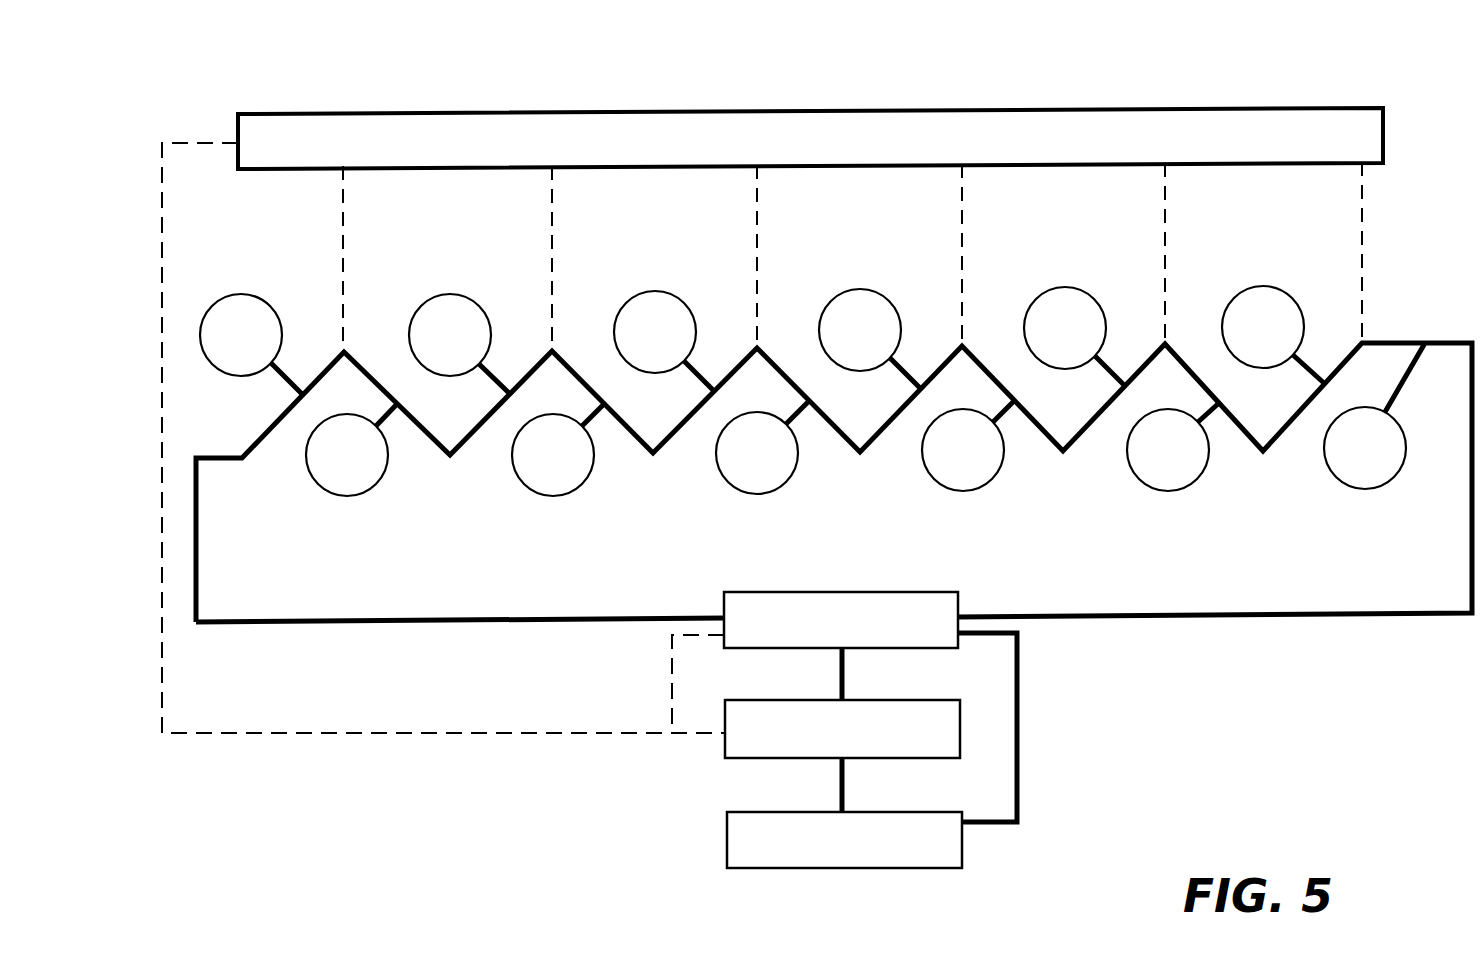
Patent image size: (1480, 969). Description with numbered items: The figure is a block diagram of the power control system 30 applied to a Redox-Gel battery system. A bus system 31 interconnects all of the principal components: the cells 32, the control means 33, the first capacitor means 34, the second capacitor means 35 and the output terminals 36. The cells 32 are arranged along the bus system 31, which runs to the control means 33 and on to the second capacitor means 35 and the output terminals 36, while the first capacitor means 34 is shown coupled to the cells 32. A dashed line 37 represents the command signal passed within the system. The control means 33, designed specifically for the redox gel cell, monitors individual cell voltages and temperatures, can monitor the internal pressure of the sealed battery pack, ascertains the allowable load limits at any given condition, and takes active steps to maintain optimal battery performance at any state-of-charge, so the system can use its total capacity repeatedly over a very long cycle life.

The power control system 30 is at (417, 848).
The bus system 31 is at (1017, 707).
The cells 32 is at (800, 467).
The control means 33 is at (960, 602).
The first capacitor means 34 is at (1316, 108).
The second capacitor means 35 is at (725, 742).
The output terminals 36 is at (962, 837).
The line 37 is at (333, 733).